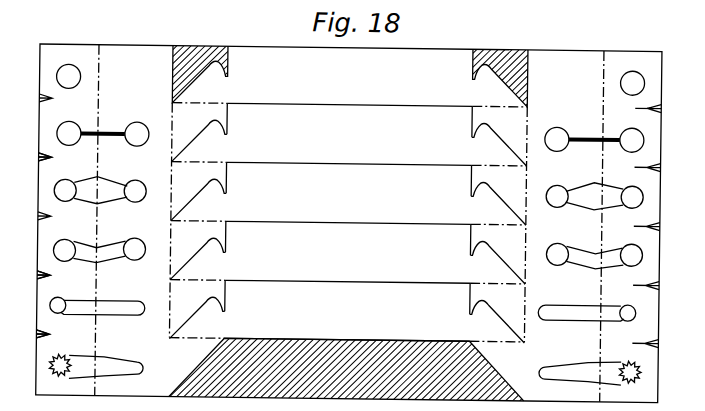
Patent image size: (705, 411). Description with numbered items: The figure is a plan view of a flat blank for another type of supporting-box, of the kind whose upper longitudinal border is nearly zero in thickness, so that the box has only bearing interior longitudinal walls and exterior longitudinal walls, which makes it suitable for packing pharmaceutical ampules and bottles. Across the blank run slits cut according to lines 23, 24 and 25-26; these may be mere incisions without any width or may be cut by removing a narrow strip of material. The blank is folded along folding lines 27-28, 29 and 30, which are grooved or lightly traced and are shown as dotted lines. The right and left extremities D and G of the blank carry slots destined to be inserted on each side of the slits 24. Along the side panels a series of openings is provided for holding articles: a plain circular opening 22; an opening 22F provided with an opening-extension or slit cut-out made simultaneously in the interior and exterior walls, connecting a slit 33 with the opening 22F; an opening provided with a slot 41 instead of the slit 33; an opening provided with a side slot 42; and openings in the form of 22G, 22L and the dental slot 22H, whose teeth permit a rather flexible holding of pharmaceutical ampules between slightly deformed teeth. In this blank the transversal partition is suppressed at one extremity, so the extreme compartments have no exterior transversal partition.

The circular opening 22 is at (57, 75).
The folding lines 27-28 is at (100, 62).
The opening with slit cut-out 22F is at (137, 123).
The slit 33 is at (93, 128).
The slot 41 is at (62, 178).
The left extremity of the blank G is at (58, 246).
The opening 22G is at (105, 262).
The side slot 42 is at (77, 307).
The opening 22L is at (62, 311).
The dental slot 22H is at (57, 370).
The slit lines 23 is at (369, 101).
The slit 24 is at (228, 116).
The slit lines 25-26 is at (194, 134).
The folding line 29 is at (193, 160).
The folding line 30 is at (173, 309).
The right extremity of the blank D is at (654, 233).